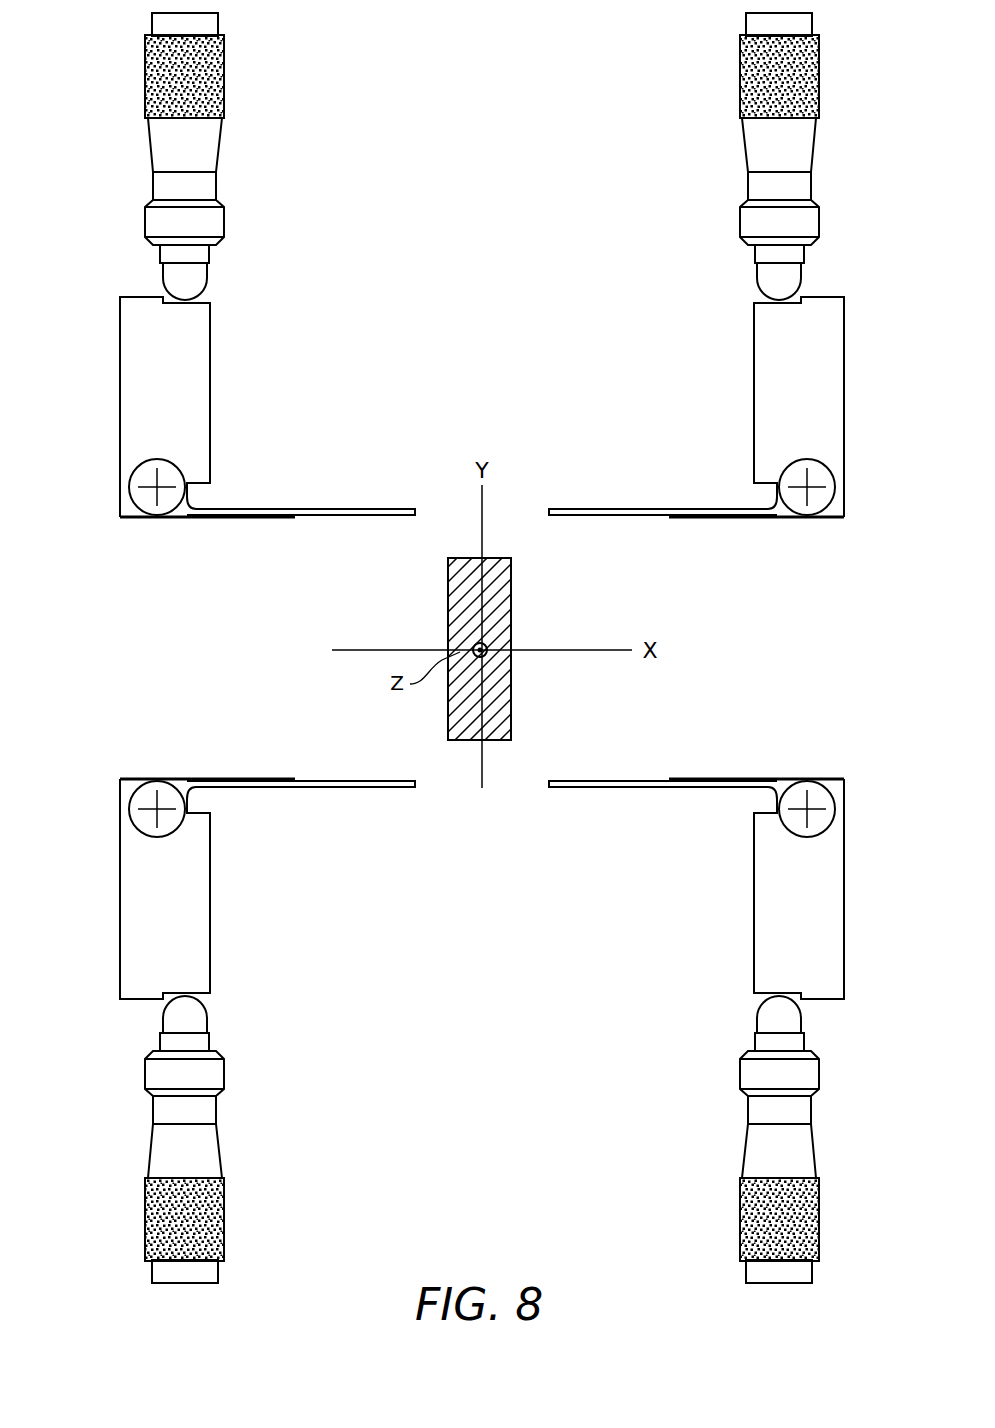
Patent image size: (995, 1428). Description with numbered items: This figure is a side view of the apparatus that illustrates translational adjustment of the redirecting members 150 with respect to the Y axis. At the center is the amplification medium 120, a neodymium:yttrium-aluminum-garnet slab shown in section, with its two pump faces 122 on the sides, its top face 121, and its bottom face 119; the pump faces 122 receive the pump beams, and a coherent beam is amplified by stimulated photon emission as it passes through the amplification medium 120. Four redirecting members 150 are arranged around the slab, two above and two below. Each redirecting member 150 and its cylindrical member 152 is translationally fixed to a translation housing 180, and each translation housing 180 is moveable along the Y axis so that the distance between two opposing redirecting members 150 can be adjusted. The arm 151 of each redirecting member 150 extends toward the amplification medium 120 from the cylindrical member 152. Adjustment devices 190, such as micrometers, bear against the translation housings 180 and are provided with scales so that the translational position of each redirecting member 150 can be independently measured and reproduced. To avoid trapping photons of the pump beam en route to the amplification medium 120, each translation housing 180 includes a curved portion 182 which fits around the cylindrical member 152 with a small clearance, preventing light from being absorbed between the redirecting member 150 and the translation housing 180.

The bottom face 119 is at (468, 742).
The amplification medium 120 is at (499, 754).
The top face 121 is at (500, 552).
The pump faces 122 is at (448, 583).
The redirecting member 150 is at (482, 645).
The finger arm 151 is at (482, 648).
The cylindrical member 152 is at (482, 649).
The translation housing 180 is at (482, 648).
The curved portion 182 is at (482, 648).
The adjustment device 190 is at (483, 648).